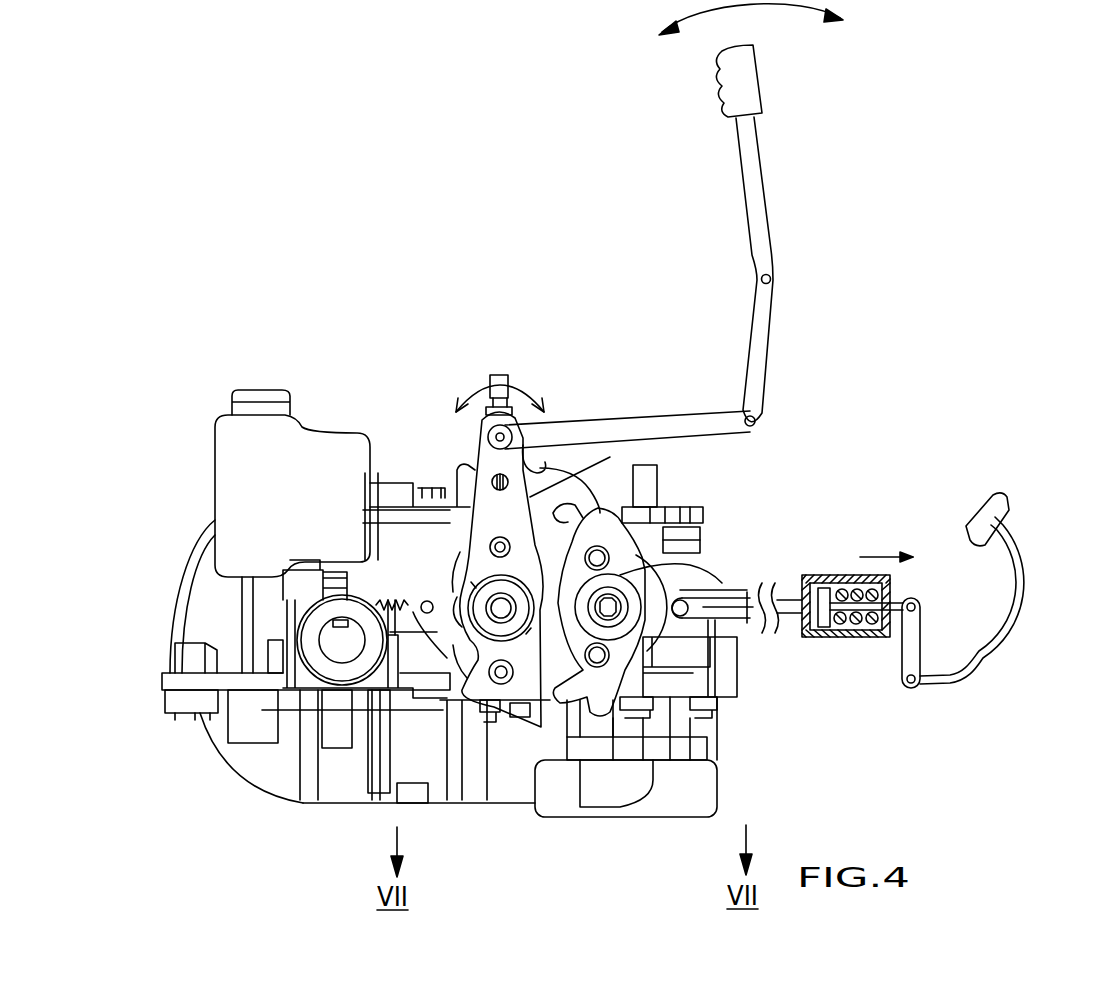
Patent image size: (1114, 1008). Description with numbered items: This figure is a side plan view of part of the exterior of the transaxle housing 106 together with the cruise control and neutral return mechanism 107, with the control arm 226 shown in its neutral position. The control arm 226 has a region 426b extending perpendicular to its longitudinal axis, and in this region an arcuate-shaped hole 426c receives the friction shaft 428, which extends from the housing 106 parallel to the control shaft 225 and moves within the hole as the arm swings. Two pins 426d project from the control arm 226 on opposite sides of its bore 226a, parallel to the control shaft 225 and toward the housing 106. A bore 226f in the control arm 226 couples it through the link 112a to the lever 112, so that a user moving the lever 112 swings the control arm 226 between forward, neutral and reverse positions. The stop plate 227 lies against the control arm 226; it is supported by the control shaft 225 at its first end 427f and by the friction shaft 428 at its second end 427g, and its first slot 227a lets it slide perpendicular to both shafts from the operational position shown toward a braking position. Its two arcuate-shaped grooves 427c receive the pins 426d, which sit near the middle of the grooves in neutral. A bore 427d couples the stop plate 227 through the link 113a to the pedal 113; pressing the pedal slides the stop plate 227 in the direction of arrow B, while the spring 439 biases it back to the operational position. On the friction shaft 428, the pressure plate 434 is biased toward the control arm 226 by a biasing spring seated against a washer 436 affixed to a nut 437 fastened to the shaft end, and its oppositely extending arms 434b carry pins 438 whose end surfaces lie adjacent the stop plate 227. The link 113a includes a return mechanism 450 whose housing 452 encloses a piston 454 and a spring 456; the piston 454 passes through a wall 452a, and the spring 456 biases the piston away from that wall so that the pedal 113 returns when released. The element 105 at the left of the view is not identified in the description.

The reservoir tank 105 is at (191, 410).
The housing 106 is at (697, 797).
The cruise control and neutral return mechanism 107 is at (662, 468).
The lever 112 is at (755, 173).
The link 112a is at (695, 423).
The pedal 113 is at (1028, 578).
The link 113a is at (793, 598).
The control shaft 225 is at (501, 608).
The control arm 226 is at (553, 478).
The bore 226a is at (535, 665).
The bore 226f is at (543, 418).
The stop plate 227 is at (730, 592).
The first slot 227a is at (405, 612).
The region 426b is at (588, 707).
The arcuate-shaped hole 426c is at (613, 476).
The pins 426d is at (408, 495).
The arcuate-shaped grooves 427c is at (447, 713).
The bore 427d is at (752, 627).
The first end 427f is at (455, 545).
The second end 427g is at (658, 637).
The friction shaft 428 is at (665, 592).
The pressure plate 434 is at (600, 503).
The arms 434b is at (700, 592).
The washer 436 is at (580, 597).
The nut 437 is at (700, 627).
The pin 438 is at (615, 540).
The spring 439 is at (380, 603).
The return mechanism 450 is at (899, 691).
The housing 452 is at (873, 648).
The wall 452a is at (898, 590).
The piston 454 is at (828, 590).
The spring 456 is at (843, 590).
The arrow B is at (882, 550).